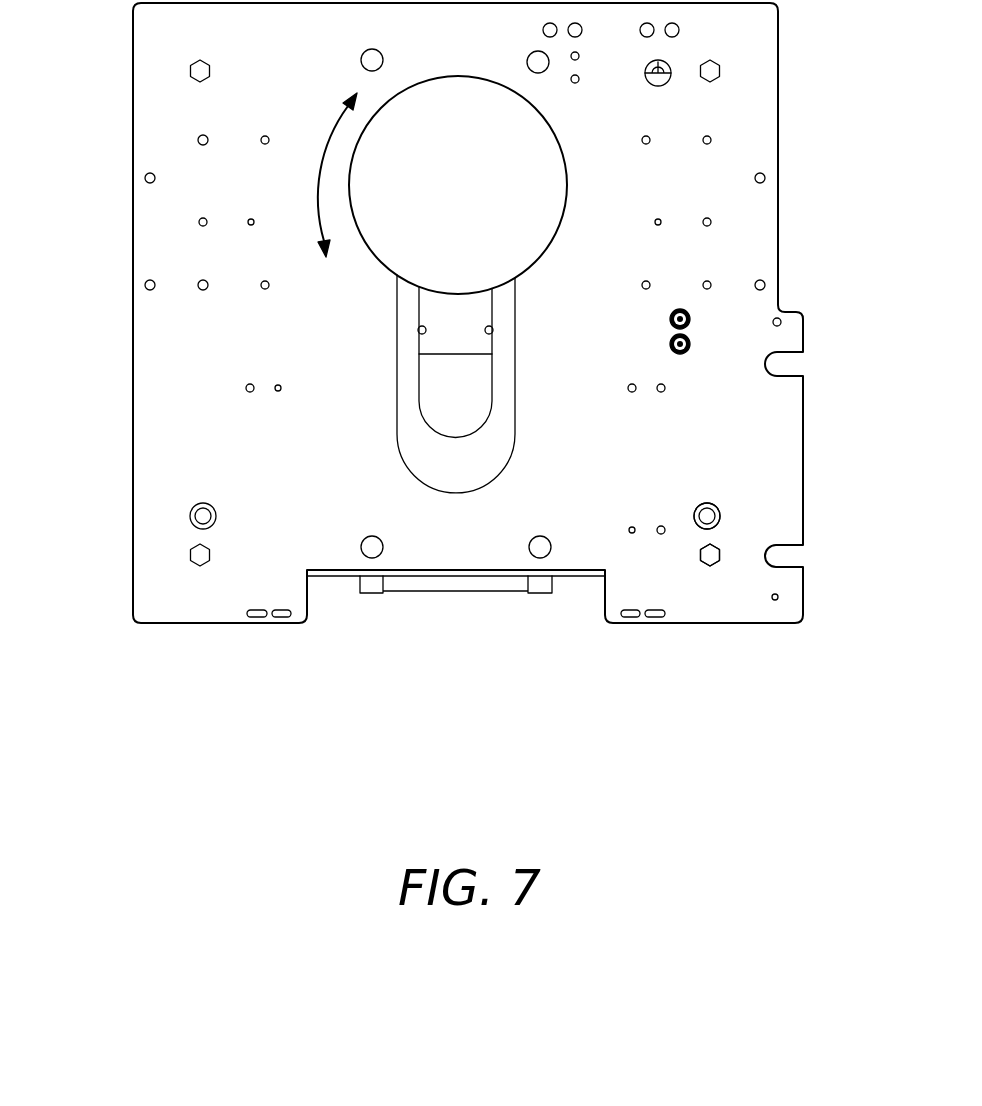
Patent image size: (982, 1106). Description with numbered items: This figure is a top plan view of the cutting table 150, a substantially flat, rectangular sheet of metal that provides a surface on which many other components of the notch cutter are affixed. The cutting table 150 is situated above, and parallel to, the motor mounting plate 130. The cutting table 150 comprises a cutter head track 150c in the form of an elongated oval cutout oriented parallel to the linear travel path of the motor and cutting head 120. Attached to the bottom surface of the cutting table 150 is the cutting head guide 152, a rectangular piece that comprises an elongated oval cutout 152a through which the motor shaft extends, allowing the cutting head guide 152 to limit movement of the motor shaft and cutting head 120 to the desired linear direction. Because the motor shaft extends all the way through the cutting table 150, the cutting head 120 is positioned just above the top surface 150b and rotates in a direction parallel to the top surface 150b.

The cutting head 120 is at (583, 178).
The motor mounting plate 130 is at (448, 317).
The cutting table 150 is at (133, 465).
The top surface 150b is at (683, 485).
The cutter head track 150c is at (531, 380).
The cutting head guide 152 is at (448, 578).
The elongated oval cutout 152a is at (404, 373).